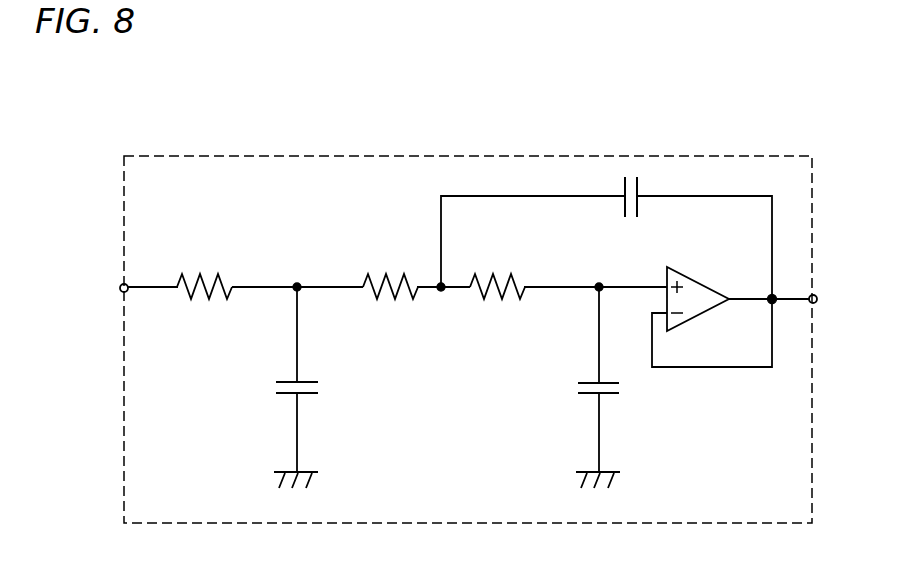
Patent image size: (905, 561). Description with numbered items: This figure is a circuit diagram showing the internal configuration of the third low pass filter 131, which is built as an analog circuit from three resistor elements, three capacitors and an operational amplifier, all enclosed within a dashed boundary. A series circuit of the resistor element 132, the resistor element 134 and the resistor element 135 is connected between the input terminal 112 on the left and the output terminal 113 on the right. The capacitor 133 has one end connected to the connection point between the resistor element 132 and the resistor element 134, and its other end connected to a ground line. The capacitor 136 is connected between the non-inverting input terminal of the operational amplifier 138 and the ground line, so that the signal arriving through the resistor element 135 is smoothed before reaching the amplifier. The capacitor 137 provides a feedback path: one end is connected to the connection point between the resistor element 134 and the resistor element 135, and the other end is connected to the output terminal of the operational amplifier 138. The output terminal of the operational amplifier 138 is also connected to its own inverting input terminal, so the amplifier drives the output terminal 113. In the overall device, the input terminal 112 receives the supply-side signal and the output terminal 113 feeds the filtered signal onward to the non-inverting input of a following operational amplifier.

The input terminal 112 is at (120, 285).
The output terminal 113 is at (817, 296).
The third low pass filter 131 is at (425, 156).
The resistor element 132 is at (226, 278).
The capacitor 133 is at (280, 395).
The resistor element 134 is at (362, 278).
The resistor element 135 is at (514, 278).
The capacitor 136 is at (582, 395).
The capacitor 137 is at (624, 204).
The operational amplifier 138 is at (708, 278).